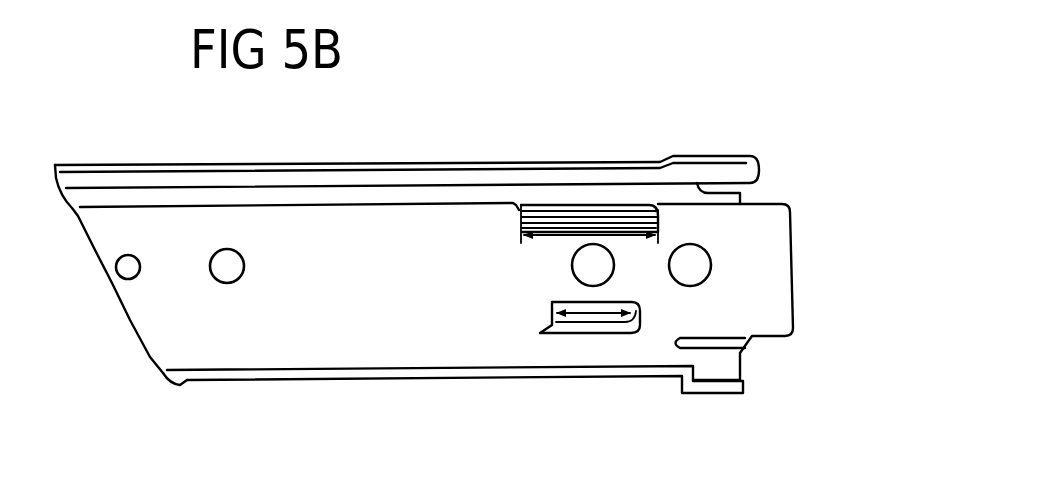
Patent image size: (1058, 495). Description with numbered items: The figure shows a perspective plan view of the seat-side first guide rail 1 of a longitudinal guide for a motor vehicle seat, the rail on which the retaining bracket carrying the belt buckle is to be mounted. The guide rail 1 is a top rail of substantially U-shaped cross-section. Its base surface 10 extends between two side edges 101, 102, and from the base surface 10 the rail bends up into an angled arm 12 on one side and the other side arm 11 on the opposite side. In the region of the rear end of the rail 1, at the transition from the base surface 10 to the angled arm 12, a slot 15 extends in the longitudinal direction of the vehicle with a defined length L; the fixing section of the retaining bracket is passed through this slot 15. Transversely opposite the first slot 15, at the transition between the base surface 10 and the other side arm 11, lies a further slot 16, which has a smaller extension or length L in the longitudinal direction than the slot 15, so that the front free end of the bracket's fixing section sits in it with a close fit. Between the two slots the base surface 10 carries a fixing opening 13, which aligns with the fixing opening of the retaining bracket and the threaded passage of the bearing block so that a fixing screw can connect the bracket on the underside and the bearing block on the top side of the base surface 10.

The first guide rail 1 is at (473, 282).
The base surface 10 is at (782, 312).
The other side arm 11 is at (655, 353).
The angled arm 12 is at (763, 203).
The fixing opening 13 is at (585, 266).
The slot 15 is at (524, 207).
The further slot 16 is at (562, 333).
The side edge 101 is at (783, 333).
The side edge 102 is at (787, 205).
The length L is at (613, 237).